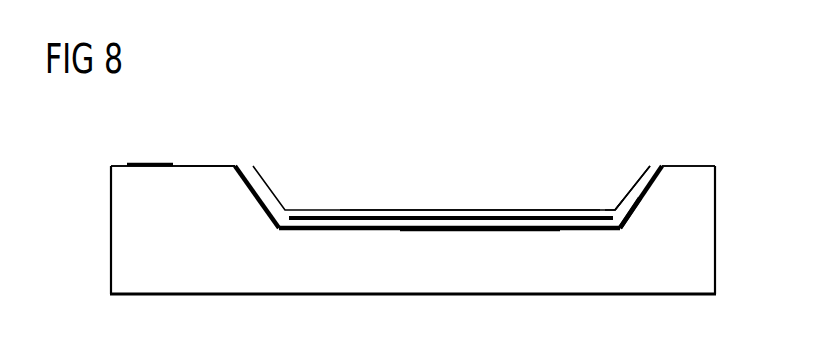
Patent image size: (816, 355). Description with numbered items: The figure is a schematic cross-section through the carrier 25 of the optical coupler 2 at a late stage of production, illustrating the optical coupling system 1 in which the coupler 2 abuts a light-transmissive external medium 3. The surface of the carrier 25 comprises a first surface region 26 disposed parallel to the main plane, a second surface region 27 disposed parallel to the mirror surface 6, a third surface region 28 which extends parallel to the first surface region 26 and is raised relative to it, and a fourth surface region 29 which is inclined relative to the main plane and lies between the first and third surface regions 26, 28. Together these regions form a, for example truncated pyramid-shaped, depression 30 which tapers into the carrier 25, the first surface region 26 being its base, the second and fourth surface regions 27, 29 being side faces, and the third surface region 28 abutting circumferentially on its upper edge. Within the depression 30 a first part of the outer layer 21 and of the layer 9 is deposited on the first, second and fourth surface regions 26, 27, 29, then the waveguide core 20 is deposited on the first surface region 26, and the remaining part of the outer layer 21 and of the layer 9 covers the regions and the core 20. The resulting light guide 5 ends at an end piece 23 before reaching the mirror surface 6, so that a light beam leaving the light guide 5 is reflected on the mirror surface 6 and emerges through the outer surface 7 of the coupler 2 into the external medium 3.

The optical coupling system 1 is at (528, 104).
The optical coupler 2 is at (80, 162).
The light-transmissive external medium 3 is at (506, 172).
The light guide 5 is at (559, 203).
The mirror surface 6 is at (648, 190).
The outer surface 7 is at (637, 177).
The layer 9 is at (268, 199).
The waveguide core 20 is at (432, 211).
The outer layer 21 is at (367, 226).
The end piece 23 is at (605, 192).
The carrier 25 is at (593, 285).
The first surface region 26 is at (468, 229).
The second surface region 27 is at (638, 213).
The third surface region 28 is at (195, 166).
The fourth surface region 29 is at (255, 193).
The depression 30 is at (384, 185).